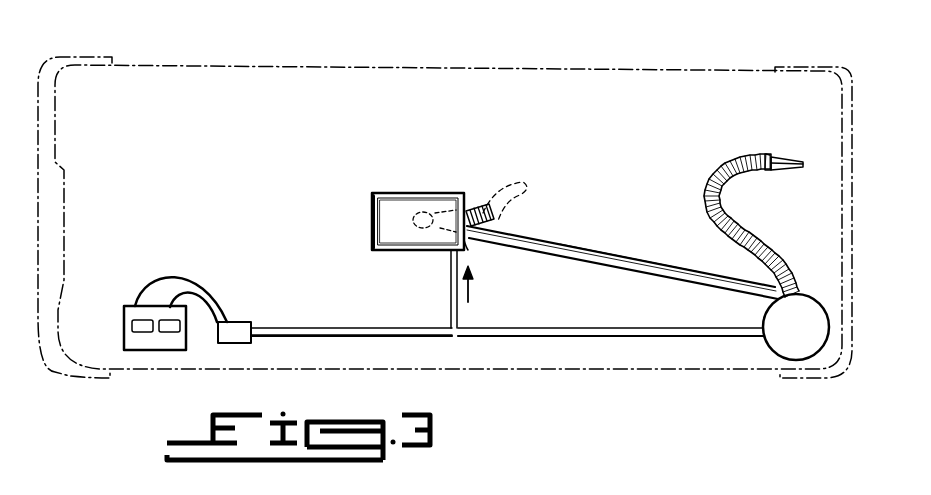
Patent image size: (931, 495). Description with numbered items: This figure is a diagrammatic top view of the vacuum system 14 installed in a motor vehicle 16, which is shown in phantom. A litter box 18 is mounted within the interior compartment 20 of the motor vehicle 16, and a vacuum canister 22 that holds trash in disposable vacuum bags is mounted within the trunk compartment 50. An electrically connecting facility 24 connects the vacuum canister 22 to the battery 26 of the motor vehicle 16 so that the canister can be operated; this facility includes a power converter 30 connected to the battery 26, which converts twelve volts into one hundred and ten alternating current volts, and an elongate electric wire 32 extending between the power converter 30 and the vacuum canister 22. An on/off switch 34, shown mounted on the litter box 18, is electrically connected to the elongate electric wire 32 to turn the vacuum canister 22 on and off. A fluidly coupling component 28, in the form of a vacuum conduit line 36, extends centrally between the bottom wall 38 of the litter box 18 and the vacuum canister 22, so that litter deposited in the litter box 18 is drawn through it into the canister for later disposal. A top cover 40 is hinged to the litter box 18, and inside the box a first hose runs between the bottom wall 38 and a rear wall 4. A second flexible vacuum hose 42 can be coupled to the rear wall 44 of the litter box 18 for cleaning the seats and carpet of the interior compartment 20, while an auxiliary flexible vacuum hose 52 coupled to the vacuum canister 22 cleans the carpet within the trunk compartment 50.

The rear wall 4 is at (482, 284).
The vacuum system 14 is at (591, 188).
The motor vehicle 16 is at (473, 67).
The litter box 18 is at (365, 211).
The interior compartment 20 is at (457, 126).
The vacuum canister 22 is at (803, 313).
The electrically connecting facility 24 is at (345, 324).
The battery 26 is at (126, 330).
The fluidly coupling component 28 is at (556, 235).
The power converter 30 is at (238, 326).
The elongate electric wire 32 is at (543, 328).
The on/off switch 34 is at (482, 208).
The vacuum conduit line 36 is at (628, 262).
The bottom wall 38 is at (405, 208).
The top cover 40 is at (390, 208).
The second flexible vacuum hose 42 is at (497, 185).
The rear wall 44 is at (465, 247).
The trunk compartment 50 is at (798, 220).
The auxiliary flexible vacuum hose 52 is at (727, 177).